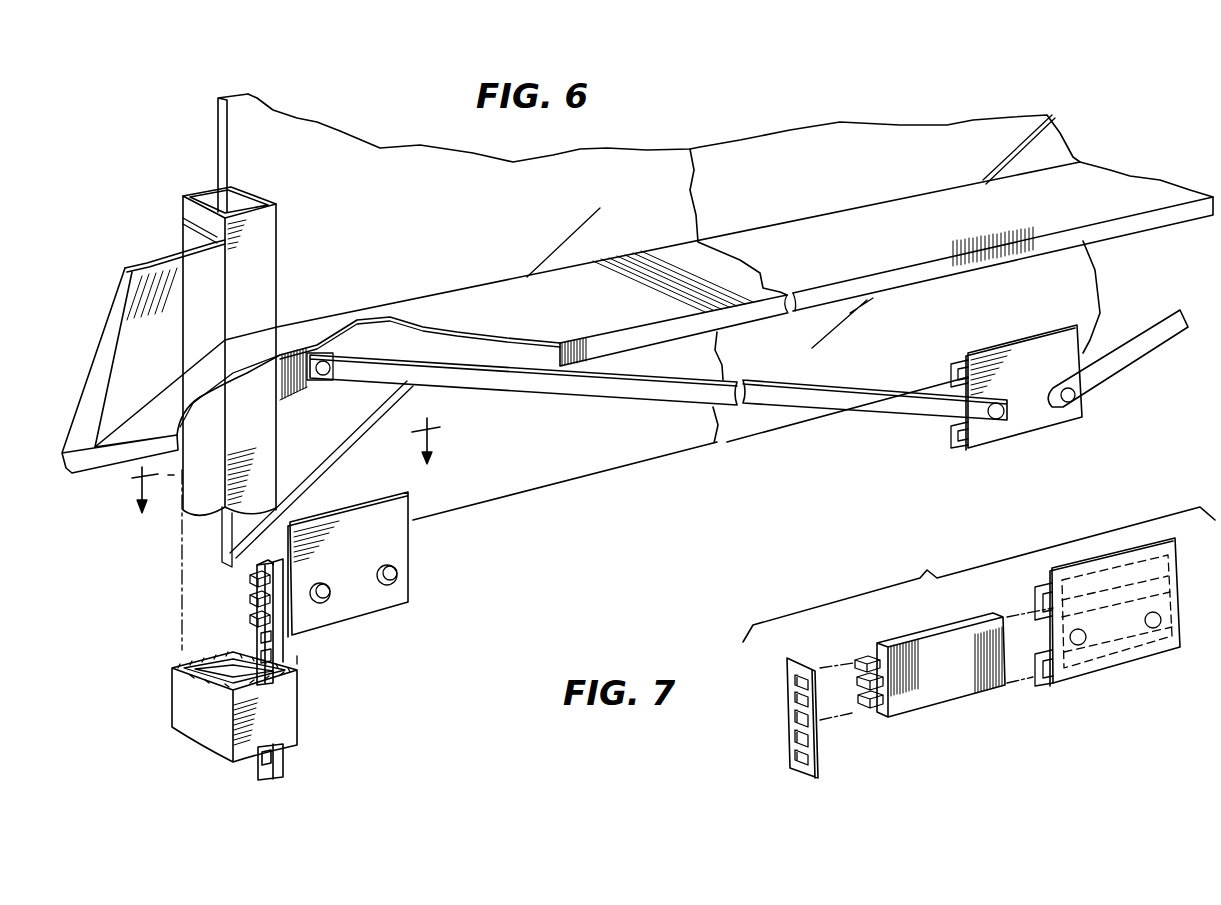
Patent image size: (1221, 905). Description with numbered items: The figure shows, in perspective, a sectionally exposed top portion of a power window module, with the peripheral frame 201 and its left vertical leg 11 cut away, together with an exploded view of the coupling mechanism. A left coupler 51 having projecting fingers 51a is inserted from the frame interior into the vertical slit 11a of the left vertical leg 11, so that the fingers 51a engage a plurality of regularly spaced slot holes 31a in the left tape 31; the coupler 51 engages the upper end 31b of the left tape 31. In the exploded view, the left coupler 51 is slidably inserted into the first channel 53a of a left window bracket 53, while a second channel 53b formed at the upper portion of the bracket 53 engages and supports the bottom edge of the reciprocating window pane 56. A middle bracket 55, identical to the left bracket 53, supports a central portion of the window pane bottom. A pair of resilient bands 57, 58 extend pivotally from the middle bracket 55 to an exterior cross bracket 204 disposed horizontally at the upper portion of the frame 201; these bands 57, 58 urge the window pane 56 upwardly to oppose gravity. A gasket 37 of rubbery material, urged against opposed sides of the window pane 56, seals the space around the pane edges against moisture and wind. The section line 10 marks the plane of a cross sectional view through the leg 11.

In FIG. 6, the section line 10 is at (291, 534).
In FIG. 6, the left vertical leg 11 is at (182, 712).
In FIG. 6, the vertical slit 11a is at (288, 660).
In FIG. 6, the left tape 31 is at (287, 753).
In FIG. 6, the slot holes 31a is at (258, 638).
In FIG. 7, the slot holes 31a is at (793, 720).
In FIG. 6, the upper end 31b is at (267, 560).
In FIG. 6, the gasket 37 is at (208, 192).
In FIG. 6, the left coupler 51 is at (287, 613).
In FIG. 7, the left coupler 51 is at (955, 685).
In FIG. 6, the projecting fingers 51a is at (253, 620).
In FIG. 7, the projecting fingers 51a is at (867, 703).
In FIG. 6, the left window bracket 53 is at (362, 607).
In FIG. 7, the left window bracket 53 is at (1170, 612).
In FIG. 7, the first channel 53a is at (1037, 660).
In FIG. 7, the second channel 53b is at (1040, 584).
In FIG. 6, the middle bracket 55 is at (1030, 425).
In FIG. 6, the window pane 56 is at (613, 457).
In FIG. 6, the resilient band 57 is at (893, 413).
In FIG. 6, the resilient band 58 is at (1140, 345).
In FIG. 6, the peripheral frame 201 is at (263, 248).
In FIG. 6, the exterior cross bracket 204 is at (400, 343).